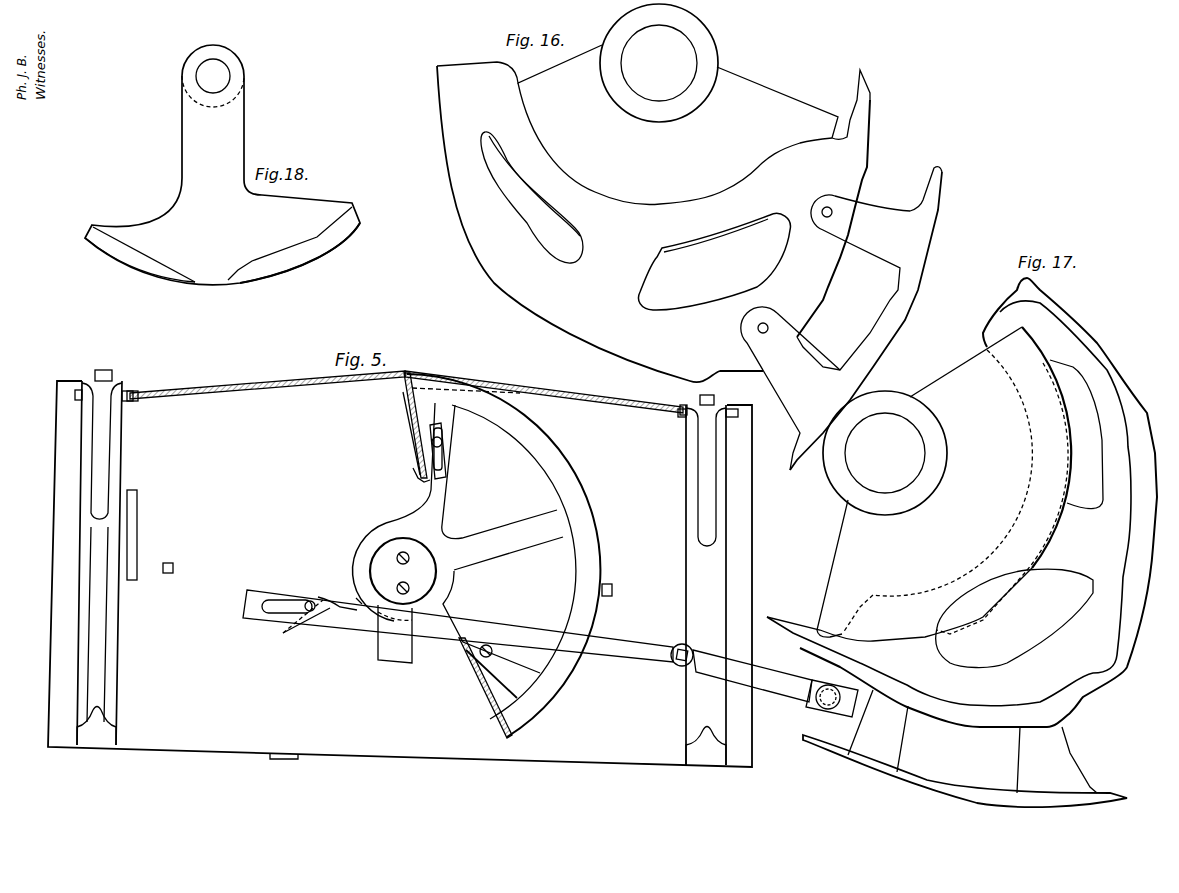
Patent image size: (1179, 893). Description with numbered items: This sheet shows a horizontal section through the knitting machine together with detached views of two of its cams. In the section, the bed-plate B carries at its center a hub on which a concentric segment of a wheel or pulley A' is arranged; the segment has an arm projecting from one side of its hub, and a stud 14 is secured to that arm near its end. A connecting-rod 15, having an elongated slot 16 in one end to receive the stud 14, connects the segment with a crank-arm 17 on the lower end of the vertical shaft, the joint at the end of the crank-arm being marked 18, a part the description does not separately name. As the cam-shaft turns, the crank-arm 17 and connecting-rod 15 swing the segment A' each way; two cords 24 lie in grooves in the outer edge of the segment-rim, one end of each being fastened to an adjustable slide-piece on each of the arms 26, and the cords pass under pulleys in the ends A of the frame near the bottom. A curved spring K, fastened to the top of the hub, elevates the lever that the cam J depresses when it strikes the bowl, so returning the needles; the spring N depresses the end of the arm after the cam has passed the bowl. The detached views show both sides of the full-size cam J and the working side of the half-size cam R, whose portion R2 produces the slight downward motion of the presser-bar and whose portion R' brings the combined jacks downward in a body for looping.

In FIG. 5, the stud 14 is at (429, 446).
In FIG. 5, the connecting-rod 15 is at (458, 568).
In FIG. 5, the elongated slot 16 is at (288, 606).
In FIG. 5, the crank-arm 17 is at (764, 680).
In FIG. 5, the pin 18 is at (828, 697).
In FIG. 5, the cords 24 is at (407, 424).
In FIG. 5, the arms 26 is at (462, 570).
In FIG. 5, the ends of the frame A is at (406, 567).
In FIG. 5, the segment of a wheel or pulley A' is at (482, 556).
In FIG. 5, the bed-plate B is at (400, 574).
In FIG. 5, the curved spring K is at (395, 634).
In FIG. 5, the spring N is at (284, 764).
In FIG. 18, the cam R is at (222, 165).
In FIG. 18, the portion of cam R R' is at (294, 245).
In FIG. 18, the portion of cam R R2 is at (140, 254).
In FIG. 5, the portion of cam R R2 is at (352, 597).
In FIG. 16, the cam J is at (841, 318).
In FIG. 17, the cam J is at (937, 491).